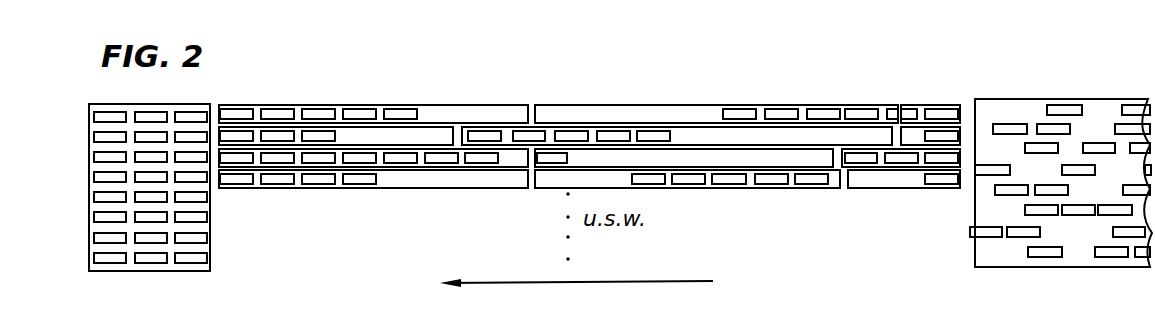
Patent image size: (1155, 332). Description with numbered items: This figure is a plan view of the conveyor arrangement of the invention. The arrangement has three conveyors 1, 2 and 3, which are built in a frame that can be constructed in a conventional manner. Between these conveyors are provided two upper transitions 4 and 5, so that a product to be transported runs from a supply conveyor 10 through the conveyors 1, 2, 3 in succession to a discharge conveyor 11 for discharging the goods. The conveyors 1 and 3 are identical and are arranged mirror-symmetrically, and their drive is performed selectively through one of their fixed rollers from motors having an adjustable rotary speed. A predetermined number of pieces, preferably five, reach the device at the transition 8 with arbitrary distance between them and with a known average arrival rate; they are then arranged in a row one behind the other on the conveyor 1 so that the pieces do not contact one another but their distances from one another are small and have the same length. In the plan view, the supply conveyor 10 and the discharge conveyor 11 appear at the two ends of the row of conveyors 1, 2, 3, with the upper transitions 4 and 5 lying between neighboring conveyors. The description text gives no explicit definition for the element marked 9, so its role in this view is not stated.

The conveyor 1 is at (925, 100).
The conveyor 2 is at (678, 104).
The conveyor 3 is at (448, 105).
The upper transition 4 is at (897, 133).
The upper transition 5 is at (535, 180).
The transition 8 is at (968, 102).
The trailing strip end 9 is at (214, 106).
The supply conveyor 10 is at (1027, 97).
The discharge conveyor 11 is at (168, 104).